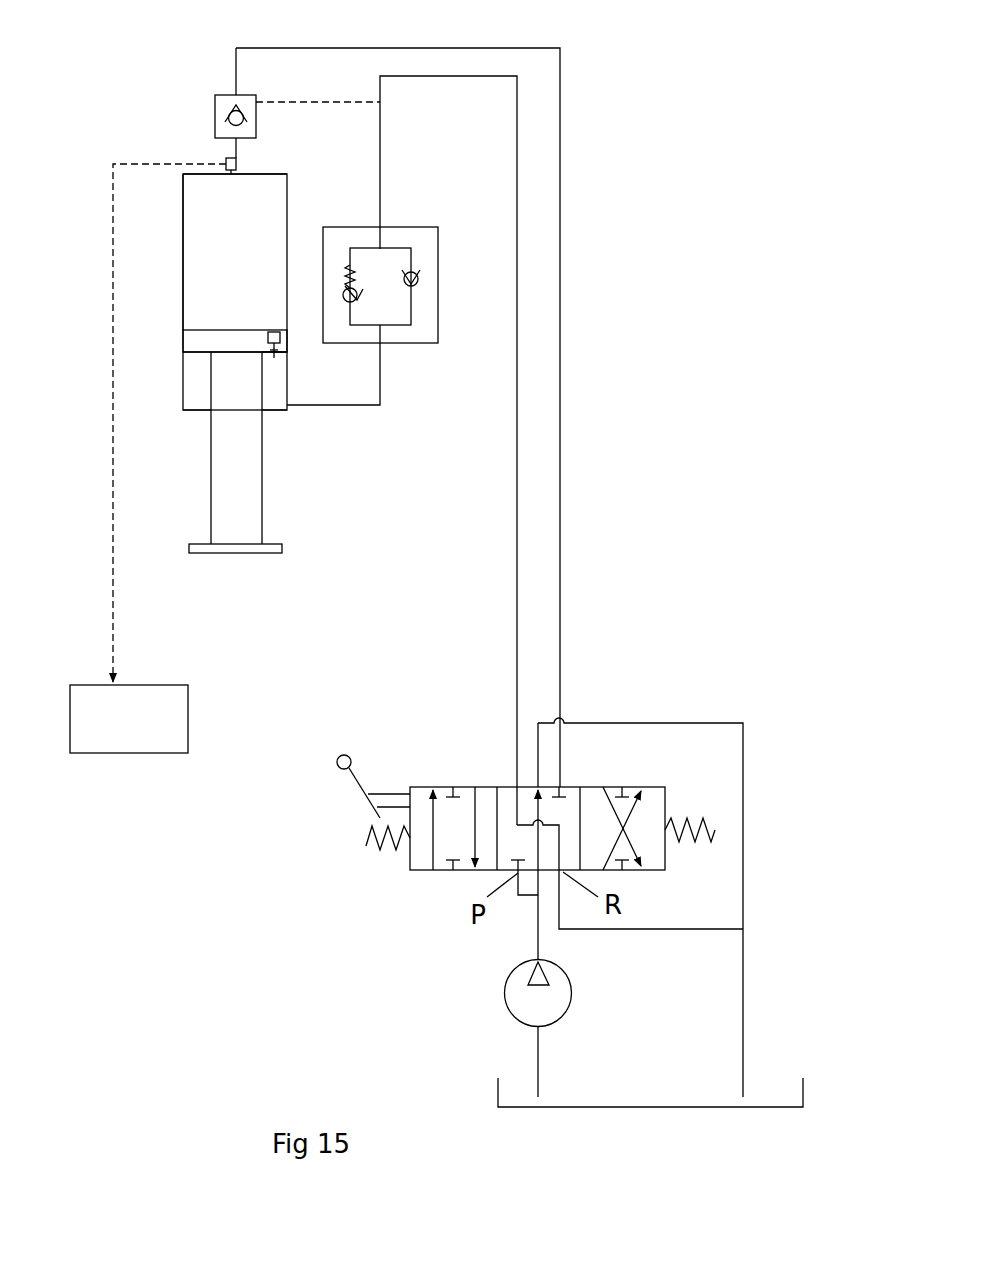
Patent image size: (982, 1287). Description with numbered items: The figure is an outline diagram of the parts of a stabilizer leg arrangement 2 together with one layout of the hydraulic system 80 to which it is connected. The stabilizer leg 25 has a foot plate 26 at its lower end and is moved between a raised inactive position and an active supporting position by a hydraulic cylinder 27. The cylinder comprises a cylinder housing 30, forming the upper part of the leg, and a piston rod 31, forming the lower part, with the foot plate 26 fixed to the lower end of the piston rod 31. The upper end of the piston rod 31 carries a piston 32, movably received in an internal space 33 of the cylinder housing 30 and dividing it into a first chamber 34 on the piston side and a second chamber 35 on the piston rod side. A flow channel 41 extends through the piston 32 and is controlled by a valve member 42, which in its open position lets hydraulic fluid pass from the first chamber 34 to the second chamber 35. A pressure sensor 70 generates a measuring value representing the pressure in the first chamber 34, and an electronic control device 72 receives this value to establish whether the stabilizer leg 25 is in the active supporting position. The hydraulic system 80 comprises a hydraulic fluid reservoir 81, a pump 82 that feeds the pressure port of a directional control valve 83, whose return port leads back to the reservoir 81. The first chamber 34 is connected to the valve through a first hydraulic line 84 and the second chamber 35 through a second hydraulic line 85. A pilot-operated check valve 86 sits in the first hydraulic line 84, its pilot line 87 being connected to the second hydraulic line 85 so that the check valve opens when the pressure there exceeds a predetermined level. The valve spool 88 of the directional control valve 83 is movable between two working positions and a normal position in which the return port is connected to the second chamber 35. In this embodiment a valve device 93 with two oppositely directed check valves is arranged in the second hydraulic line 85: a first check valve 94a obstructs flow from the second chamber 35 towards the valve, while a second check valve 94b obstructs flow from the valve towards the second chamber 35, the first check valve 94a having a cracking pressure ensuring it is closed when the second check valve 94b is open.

The stabilizer leg arrangement 2 is at (143, 75).
The stabilizer leg 25 is at (298, 165).
The foot plate 26 is at (203, 544).
The hydraulic cylinder 27 is at (172, 342).
The cylinder housing 30 is at (182, 285).
The piston rod 31 is at (211, 447).
The piston 32 is at (217, 342).
The internal space 33 is at (195, 231).
The first chamber 34 is at (198, 302).
The second chamber 35 is at (278, 393).
The flow channel 41 is at (265, 352).
The valve member 42 is at (273, 330).
The pressure sensor 70 is at (238, 164).
The electronic control device 72 is at (100, 748).
The hydraulic system 80 is at (255, 903).
The hydraulic fluid reservoir 81 is at (793, 1087).
The pump 82 is at (517, 1007).
The directional control valve 83 is at (409, 906).
The first hydraulic line 84 is at (560, 160).
The second hydraulic line 85 is at (517, 157).
The pilot-operated check valve 86 is at (222, 94).
The pilot line 87 is at (297, 100).
The valve spool 88 is at (590, 787).
The valve device 93 is at (417, 232).
The first check valve 94a is at (420, 275).
The second check valve 94b is at (342, 292).